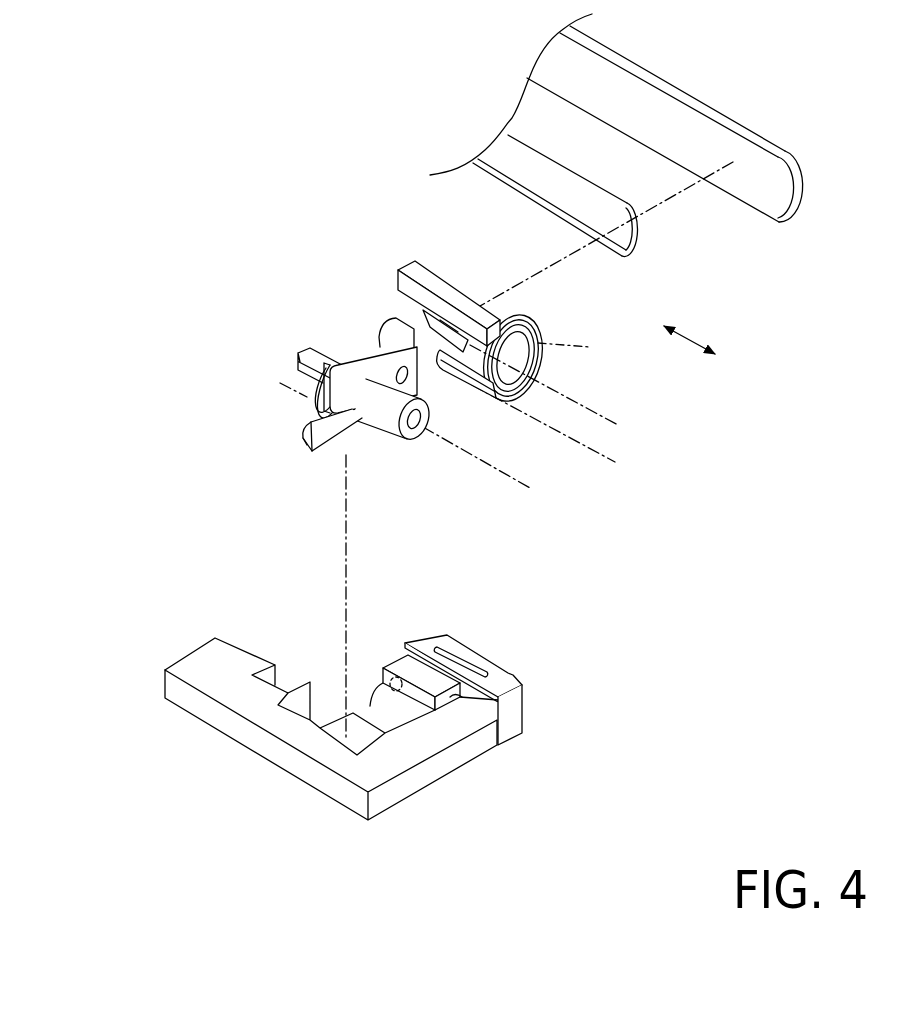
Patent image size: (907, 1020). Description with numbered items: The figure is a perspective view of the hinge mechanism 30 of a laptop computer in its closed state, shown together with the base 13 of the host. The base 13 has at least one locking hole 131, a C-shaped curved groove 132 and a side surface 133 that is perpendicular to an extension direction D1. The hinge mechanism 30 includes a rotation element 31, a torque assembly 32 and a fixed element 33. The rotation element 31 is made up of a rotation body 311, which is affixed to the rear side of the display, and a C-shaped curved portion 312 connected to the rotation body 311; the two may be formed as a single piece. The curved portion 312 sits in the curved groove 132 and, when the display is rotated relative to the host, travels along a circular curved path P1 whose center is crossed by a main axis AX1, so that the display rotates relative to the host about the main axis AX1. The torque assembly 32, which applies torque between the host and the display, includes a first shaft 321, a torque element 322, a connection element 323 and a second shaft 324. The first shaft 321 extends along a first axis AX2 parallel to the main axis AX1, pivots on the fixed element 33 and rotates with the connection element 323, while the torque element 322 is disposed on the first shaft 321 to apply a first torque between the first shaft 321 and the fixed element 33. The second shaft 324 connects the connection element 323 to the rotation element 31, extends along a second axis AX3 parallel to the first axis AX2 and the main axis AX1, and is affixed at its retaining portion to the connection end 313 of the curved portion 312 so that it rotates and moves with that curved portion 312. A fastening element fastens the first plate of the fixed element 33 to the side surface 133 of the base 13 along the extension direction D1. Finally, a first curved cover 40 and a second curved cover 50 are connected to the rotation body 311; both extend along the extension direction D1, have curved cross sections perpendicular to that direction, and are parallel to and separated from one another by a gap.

The base 13 is at (385, 695).
The locking hole 131 is at (393, 676).
The curved groove 132 is at (488, 658).
The side surface 133 is at (432, 645).
The hinge mechanism 30 is at (181, 100).
The rotation element 31 is at (407, 281).
The rotation body 311 is at (440, 268).
The curved portion 312 is at (528, 312).
The connection end 313 is at (470, 392).
The torque assembly 32 is at (314, 331).
The first shaft 321 is at (425, 430).
The torque element 322 is at (325, 415).
The connection element 323 is at (360, 352).
The second shaft 324 is at (410, 322).
The fixed element 33 is at (283, 478).
The first curved cover 40 is at (803, 174).
The second curved cover 50 is at (643, 230).
The main axis AX1 is at (601, 308).
The first axis AX2 is at (437, 561).
The second axis AX3 is at (575, 438).
The curved path P1 is at (587, 344).
The extension direction D1 is at (700, 329).